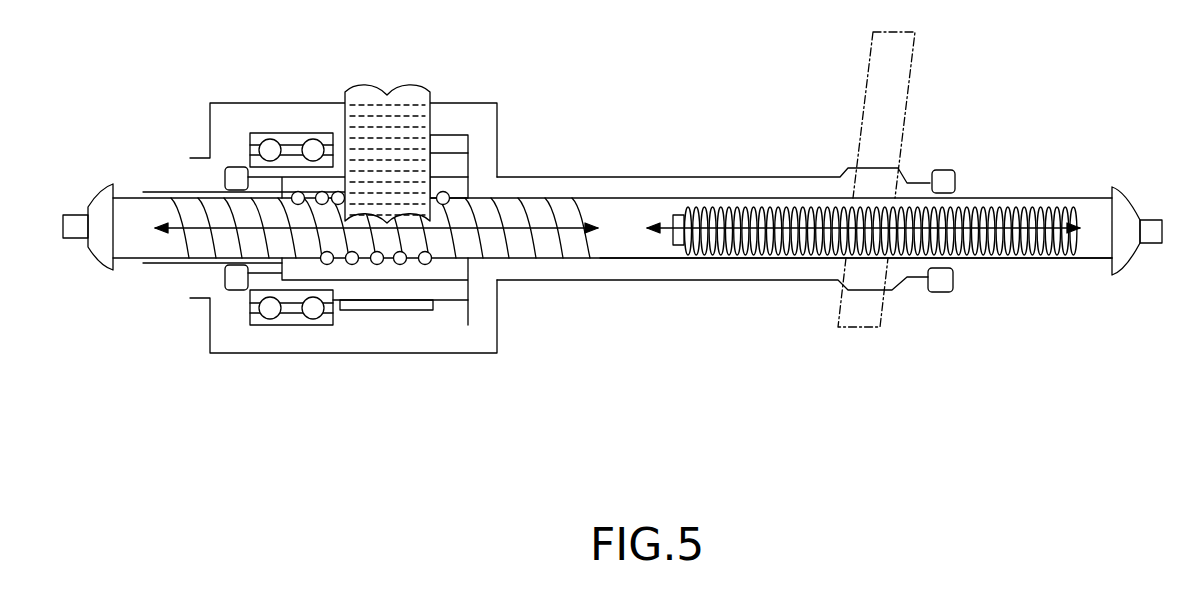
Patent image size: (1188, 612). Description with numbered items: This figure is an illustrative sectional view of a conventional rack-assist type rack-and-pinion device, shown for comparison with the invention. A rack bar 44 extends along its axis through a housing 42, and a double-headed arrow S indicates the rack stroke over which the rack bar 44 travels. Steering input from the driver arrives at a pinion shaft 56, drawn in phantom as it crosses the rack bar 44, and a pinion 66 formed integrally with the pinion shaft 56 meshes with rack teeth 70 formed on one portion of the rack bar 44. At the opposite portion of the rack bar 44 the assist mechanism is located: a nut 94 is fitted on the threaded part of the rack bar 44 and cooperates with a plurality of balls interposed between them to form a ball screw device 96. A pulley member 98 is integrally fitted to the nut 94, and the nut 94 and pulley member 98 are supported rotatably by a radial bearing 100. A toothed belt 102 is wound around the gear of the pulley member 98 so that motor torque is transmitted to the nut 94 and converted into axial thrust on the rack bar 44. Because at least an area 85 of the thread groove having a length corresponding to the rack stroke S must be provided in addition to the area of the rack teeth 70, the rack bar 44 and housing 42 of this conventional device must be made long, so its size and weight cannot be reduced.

The housing 42 is at (575, 190).
The rack bar 44 is at (649, 262).
The pinion shaft 56 is at (912, 61).
The pinion 66 is at (898, 288).
The rack teeth 70 is at (1027, 200).
The area of thread groove 85 is at (203, 268).
The nut 94 is at (297, 194).
The ball screw device 96 is at (477, 300).
The pulley member 98 is at (373, 296).
The radial bearing 100 is at (269, 312).
The toothed belt 102 is at (392, 110).
The rack stroke S is at (774, 212).